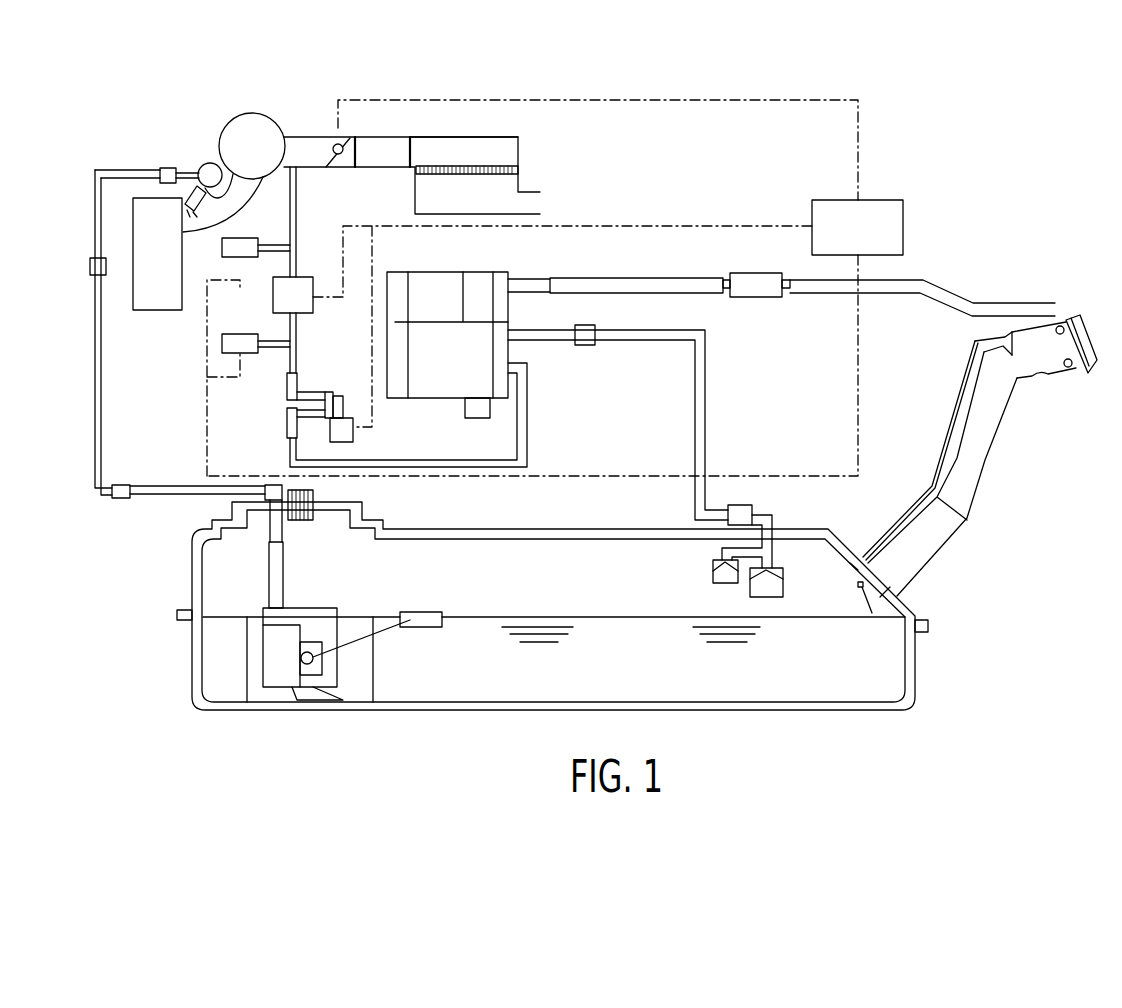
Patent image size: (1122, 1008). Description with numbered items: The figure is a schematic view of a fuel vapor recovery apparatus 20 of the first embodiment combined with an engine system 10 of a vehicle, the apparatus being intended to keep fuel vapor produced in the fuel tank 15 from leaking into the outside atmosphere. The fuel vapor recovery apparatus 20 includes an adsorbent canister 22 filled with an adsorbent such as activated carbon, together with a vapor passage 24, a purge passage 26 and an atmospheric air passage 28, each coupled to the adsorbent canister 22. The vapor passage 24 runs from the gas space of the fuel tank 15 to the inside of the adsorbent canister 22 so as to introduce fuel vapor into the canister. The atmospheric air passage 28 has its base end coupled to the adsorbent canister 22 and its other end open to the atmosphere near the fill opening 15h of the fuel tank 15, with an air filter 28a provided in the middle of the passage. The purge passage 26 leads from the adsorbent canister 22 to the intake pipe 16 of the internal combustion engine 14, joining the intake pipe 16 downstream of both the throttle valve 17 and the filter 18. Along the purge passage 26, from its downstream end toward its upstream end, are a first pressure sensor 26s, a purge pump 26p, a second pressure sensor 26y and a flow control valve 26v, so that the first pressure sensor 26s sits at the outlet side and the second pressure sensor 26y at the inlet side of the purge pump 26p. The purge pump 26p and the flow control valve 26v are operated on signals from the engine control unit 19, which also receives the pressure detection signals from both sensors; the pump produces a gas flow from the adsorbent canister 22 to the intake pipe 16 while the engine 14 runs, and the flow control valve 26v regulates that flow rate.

The engine system 10 is at (637, 80).
The internal combustion engine 14 is at (160, 298).
The fuel tank 15 is at (919, 662).
The fill opening 15h is at (1048, 368).
The intake pipe 16 is at (298, 148).
The throttle valve 17 is at (329, 158).
The filter 18 is at (468, 167).
The engine control unit (ECU) 19 is at (883, 199).
The fuel vapor recovery apparatus 20 is at (627, 215).
The adsorbent canister 22 is at (479, 262).
The vapor passage 24 is at (637, 341).
The purge passage 26 is at (297, 195).
The first pressure sensor 26s is at (248, 258).
The purge pump 26p is at (303, 309).
The second pressure sensor 26y is at (248, 353).
The flow control valve 26v is at (342, 433).
The atmospheric air passage 28 is at (658, 287).
The air filter 28a is at (755, 283).